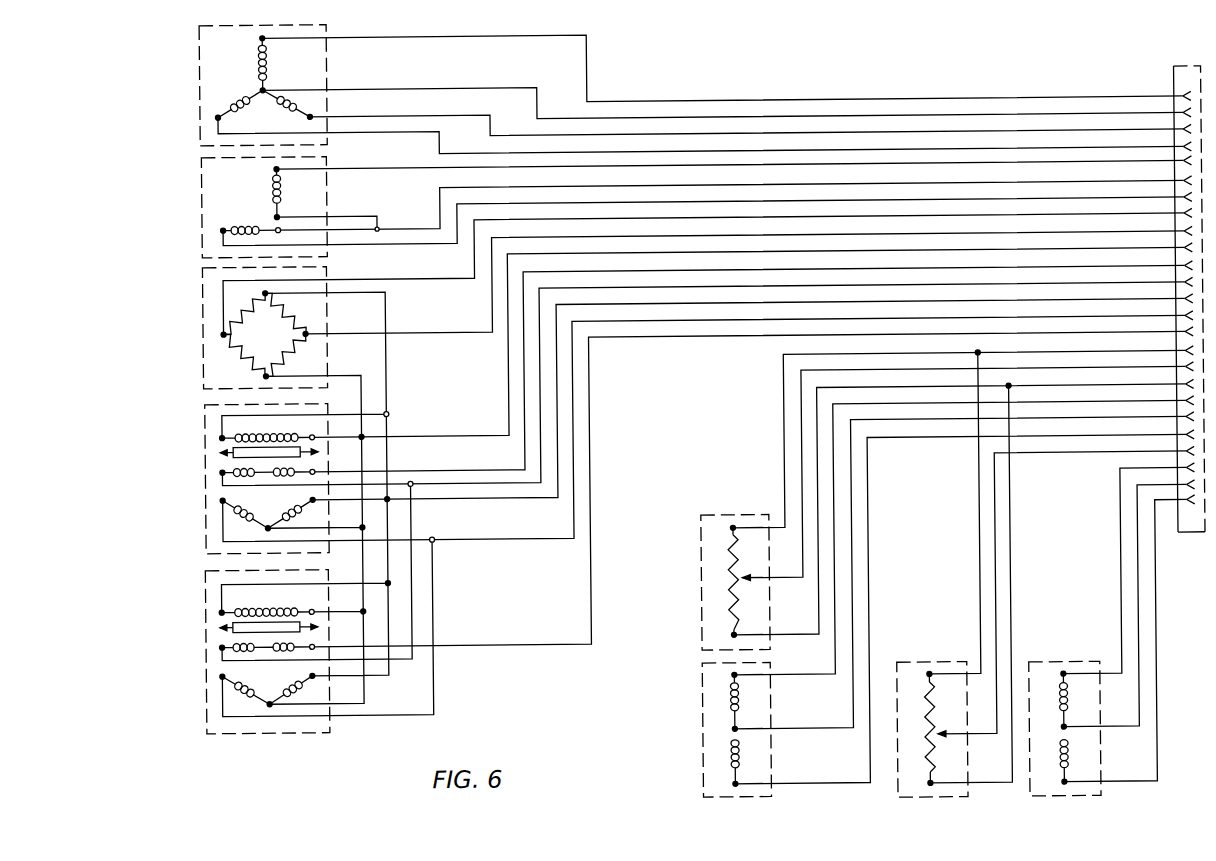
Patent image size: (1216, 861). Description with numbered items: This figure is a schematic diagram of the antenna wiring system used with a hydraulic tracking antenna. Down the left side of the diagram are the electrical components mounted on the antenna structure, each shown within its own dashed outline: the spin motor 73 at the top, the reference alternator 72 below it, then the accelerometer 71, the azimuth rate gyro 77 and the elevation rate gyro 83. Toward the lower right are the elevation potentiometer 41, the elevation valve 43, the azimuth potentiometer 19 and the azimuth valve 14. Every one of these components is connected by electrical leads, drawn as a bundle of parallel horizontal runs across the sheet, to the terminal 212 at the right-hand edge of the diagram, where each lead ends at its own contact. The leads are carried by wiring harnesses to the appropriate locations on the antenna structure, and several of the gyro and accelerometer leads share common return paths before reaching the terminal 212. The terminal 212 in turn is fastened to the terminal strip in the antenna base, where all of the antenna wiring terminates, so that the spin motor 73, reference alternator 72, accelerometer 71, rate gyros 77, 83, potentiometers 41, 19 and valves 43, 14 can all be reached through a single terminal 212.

The spin motor 73 is at (203, 60).
The reference alternator 72 is at (205, 181).
The accelerometer 71 is at (202, 309).
The azimuth rate gyro 77 is at (203, 441).
The elevation rate gyro 83 is at (204, 609).
The elevation potentiometer 41 is at (701, 550).
The elevation valve 43 is at (700, 701).
The azimuth potentiometer 19 is at (894, 780).
The azimuth valve 14 is at (1026, 779).
The terminal 212 is at (1174, 92).